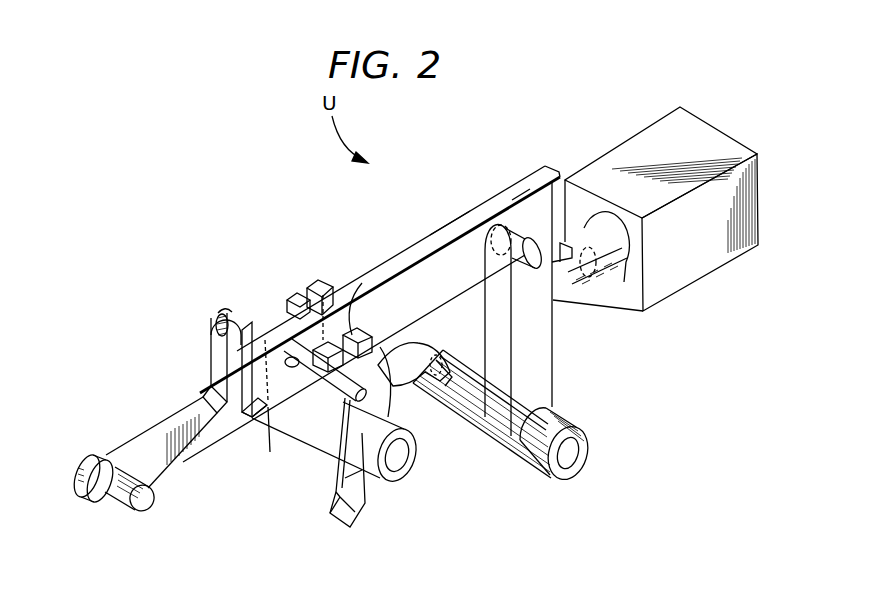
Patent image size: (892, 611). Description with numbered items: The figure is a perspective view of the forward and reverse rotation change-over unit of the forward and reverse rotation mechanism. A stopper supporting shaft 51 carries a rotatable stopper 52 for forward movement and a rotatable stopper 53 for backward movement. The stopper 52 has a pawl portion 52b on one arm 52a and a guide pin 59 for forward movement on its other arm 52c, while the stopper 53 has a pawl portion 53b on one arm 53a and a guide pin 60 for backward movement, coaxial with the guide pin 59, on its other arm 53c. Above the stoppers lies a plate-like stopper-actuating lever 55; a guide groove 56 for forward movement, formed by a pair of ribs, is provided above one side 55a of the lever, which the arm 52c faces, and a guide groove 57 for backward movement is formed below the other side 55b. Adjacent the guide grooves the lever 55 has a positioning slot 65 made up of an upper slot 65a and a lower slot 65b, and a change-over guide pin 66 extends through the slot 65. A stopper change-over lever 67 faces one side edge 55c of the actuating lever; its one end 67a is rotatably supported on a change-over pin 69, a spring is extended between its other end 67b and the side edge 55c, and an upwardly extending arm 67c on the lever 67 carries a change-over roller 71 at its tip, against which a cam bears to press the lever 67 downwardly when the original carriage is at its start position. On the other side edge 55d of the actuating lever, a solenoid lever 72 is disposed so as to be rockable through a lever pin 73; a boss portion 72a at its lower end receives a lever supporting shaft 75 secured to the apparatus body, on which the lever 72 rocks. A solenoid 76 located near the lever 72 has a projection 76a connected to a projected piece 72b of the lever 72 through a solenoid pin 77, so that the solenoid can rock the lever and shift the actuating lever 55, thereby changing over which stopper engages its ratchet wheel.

The stopper supporting shaft 51 is at (399, 458).
The stopper for forward movement 52 is at (400, 382).
The one arm of stopper for forward movement 52a is at (465, 305).
The pawl portion 52b is at (432, 375).
The other arm of stopper for forward movement 52c is at (268, 343).
The stopper for backward movement 53 is at (372, 460).
The one arm of stopper for backward movement 53a is at (365, 500).
The pawl portion 53b is at (352, 522).
The other arm of stopper for backward movement 53c is at (391, 330).
The stopper-actuating lever 55 is at (486, 208).
The one side of stopper-actuating lever 55a is at (463, 232).
The other side of stopper-actuating lever 55b is at (458, 290).
The one side edge of stopper-actuating lever 55c is at (235, 348).
The other side edge of stopper-actuating lever 55d is at (506, 200).
The guide groove for forward movement 56 is at (305, 290).
The guide groove for backward movement 57 is at (348, 333).
The guide pin for forward movement 59 is at (323, 295).
The guide pin for backward movement 60 is at (360, 340).
The positioning slot 65 is at (287, 300).
The upper slot 65a is at (270, 452).
The lower slot 65b is at (287, 405).
The change-over guide pin 66 is at (337, 402).
The stopper change-over lever 67 is at (157, 432).
The one end of stopper change-over lever 67a is at (95, 467).
The other end of stopper change-over lever 67b is at (253, 418).
The upwardly extending arm 67c is at (210, 342).
The change-over pin 69 is at (154, 500).
The change-over roller 71 is at (218, 310).
The solenoid lever 72 is at (545, 369).
The boss portion 72a is at (533, 456).
The projected piece 72b is at (558, 305).
The lever pin 73 is at (548, 250).
The lever supporting shaft 75 is at (571, 458).
The solenoid 76 is at (683, 275).
The projection 76a is at (607, 278).
The solenoid pin 77 is at (584, 232).